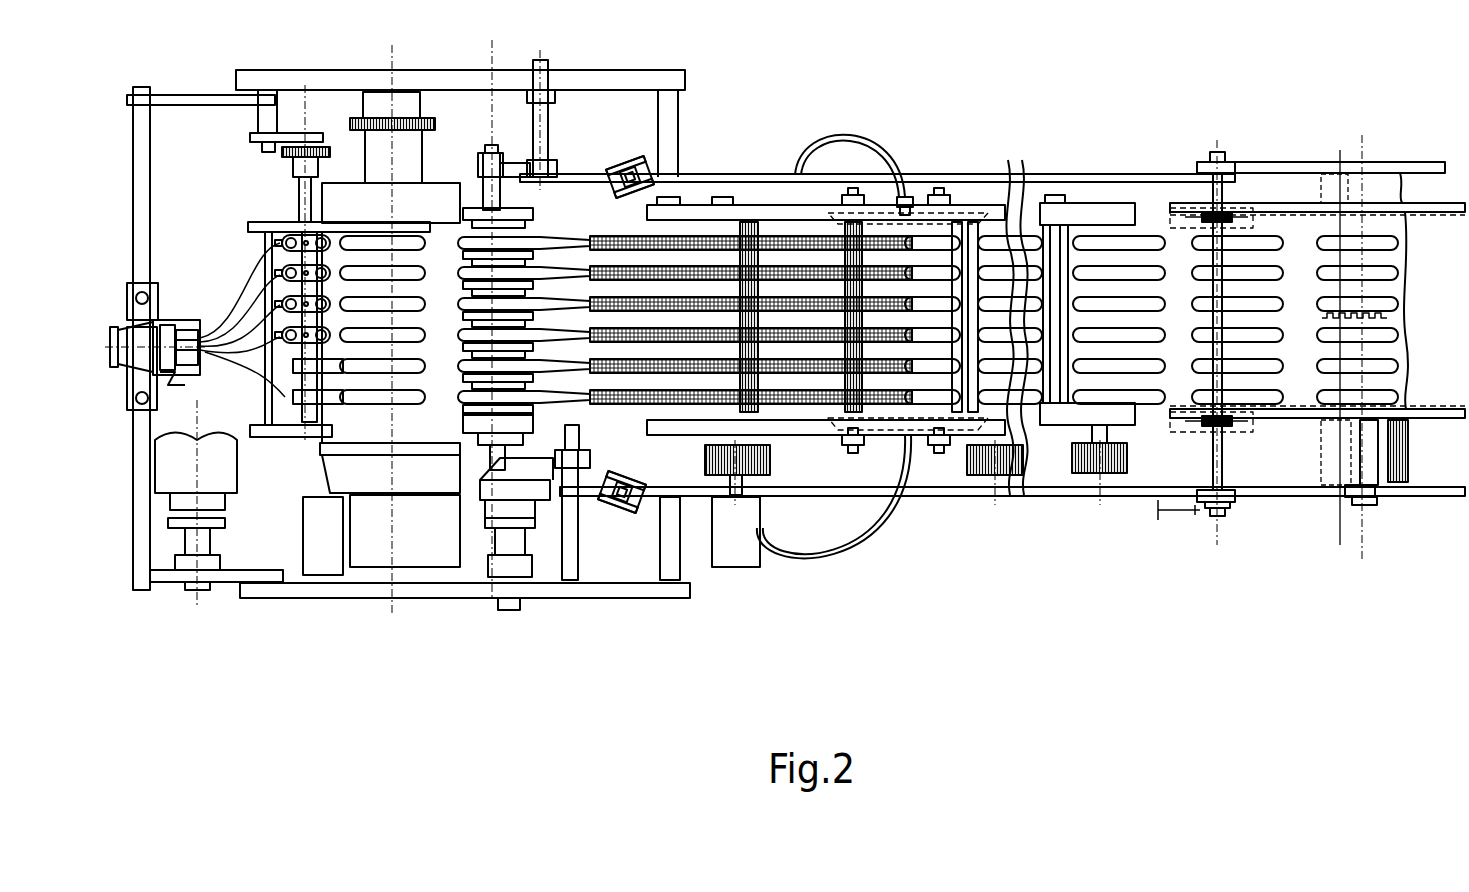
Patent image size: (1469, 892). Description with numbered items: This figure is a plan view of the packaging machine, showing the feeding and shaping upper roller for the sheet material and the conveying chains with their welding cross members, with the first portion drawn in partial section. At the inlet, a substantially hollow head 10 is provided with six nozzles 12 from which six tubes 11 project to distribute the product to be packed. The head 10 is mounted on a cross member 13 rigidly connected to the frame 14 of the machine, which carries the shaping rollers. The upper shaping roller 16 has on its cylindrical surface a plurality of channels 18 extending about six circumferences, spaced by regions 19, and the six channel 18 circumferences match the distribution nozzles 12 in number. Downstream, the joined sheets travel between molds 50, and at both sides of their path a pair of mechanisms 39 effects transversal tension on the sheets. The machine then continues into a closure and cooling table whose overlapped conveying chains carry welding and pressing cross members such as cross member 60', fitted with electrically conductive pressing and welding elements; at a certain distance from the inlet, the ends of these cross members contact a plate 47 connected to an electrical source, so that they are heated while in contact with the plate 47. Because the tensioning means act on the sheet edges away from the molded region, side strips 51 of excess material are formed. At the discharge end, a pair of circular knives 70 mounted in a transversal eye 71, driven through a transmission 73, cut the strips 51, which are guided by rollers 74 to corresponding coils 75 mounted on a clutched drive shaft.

The hollow head 10 is at (118, 325).
The tubes 11 is at (250, 290).
The nozzles 12 is at (203, 318).
The cross member 13 is at (201, 312).
The frame 14 is at (300, 75).
The upper shaping roller 16 is at (483, 180).
The channels 18 is at (372, 240).
The regions 19 is at (455, 232).
The transversal tension mechanisms 39 is at (653, 161).
The plate 47 is at (921, 212).
The molds 50 is at (1176, 362).
The side strips of excess material 51 is at (980, 185).
The welding and pressing cross member 60' is at (1044, 326).
The circular knives 70 is at (1225, 215).
The transversal eye 71 is at (1212, 197).
The transmission 73 is at (1168, 518).
The rollers 74 is at (1323, 183).
The coils 75 is at (1428, 160).